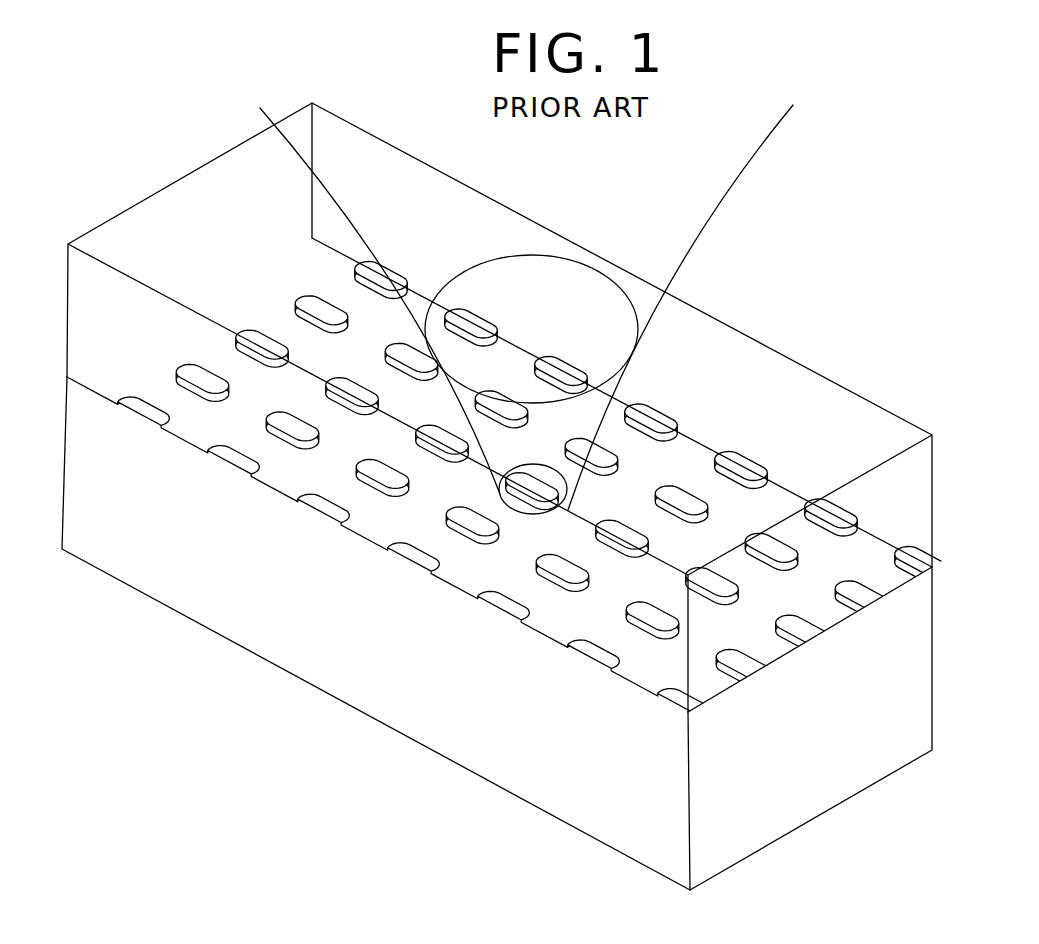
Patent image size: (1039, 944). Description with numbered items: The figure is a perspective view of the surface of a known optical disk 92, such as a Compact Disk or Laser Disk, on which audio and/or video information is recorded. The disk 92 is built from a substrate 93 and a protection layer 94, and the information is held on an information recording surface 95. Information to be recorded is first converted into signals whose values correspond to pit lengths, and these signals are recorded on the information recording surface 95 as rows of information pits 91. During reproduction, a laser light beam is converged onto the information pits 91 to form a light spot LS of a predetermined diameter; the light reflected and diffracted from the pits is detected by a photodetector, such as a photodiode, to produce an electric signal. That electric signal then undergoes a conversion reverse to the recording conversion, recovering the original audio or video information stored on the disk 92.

The information pits 91 is at (678, 494).
The disk 92 is at (790, 305).
The substrate 93 is at (847, 400).
The protection layer 94 is at (922, 690).
The information recording surface 95 is at (867, 556).
The light spot LS is at (525, 520).